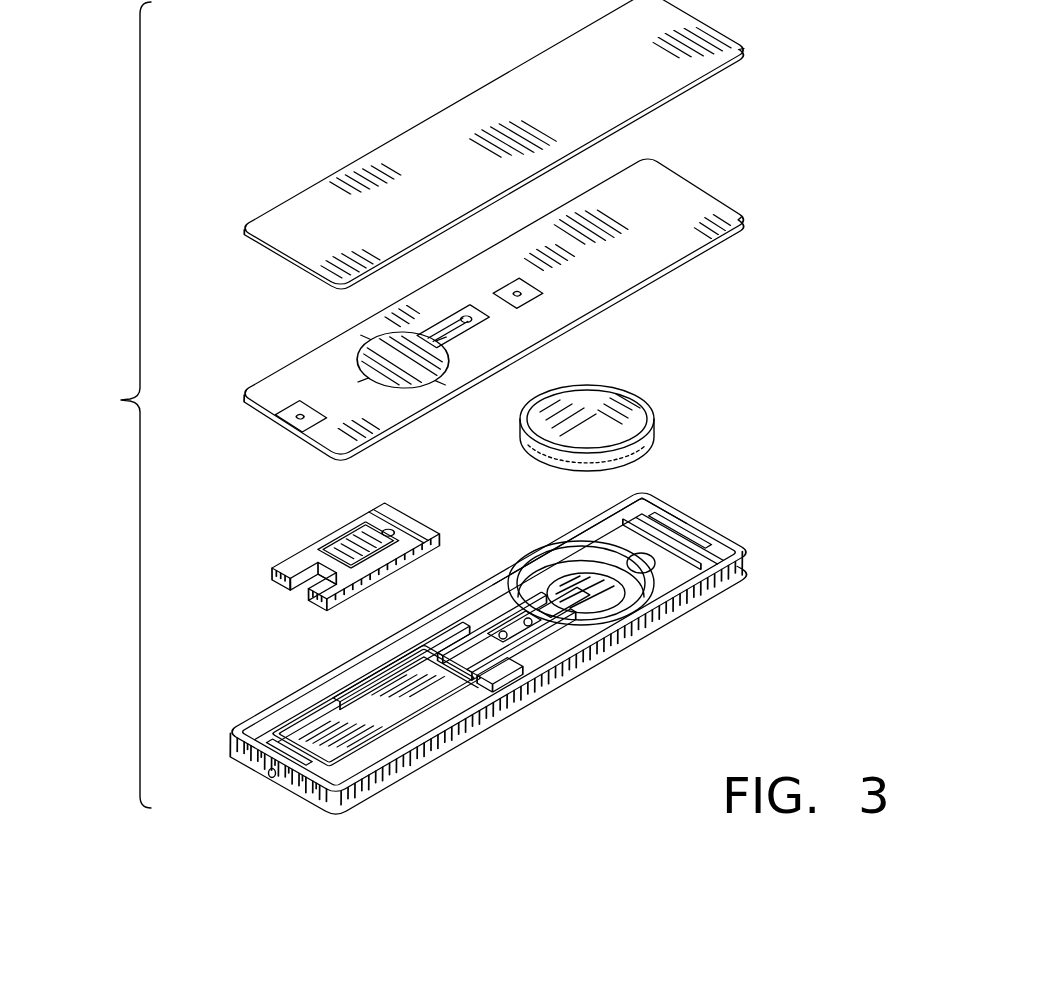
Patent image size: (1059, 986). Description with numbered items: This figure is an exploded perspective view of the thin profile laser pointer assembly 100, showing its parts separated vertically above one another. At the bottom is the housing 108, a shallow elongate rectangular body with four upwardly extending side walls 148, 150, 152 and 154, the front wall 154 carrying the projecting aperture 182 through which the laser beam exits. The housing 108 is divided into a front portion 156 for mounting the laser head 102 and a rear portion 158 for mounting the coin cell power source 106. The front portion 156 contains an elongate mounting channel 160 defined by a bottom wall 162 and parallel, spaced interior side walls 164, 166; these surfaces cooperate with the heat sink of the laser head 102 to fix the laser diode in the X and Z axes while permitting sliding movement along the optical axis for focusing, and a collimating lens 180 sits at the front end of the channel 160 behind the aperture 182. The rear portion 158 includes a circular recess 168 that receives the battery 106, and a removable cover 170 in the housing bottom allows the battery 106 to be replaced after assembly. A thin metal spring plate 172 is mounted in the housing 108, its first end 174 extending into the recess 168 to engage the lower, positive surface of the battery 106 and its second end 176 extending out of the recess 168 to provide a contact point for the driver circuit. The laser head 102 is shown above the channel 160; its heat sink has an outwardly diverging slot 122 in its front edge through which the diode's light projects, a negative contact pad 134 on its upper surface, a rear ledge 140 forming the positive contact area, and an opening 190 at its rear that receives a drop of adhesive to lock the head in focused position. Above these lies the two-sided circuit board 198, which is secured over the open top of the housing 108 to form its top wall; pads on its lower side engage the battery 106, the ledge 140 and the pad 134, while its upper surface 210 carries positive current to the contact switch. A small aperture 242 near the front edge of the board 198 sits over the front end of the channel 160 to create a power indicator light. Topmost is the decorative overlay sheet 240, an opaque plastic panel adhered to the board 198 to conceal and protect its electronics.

The laser pointer assembly 100 is at (109, 385).
The laser head 102 is at (342, 545).
The coin cell power source 106 is at (625, 392).
The housing 108 is at (498, 640).
The outwardly diverging slot 122 is at (292, 601).
The contact pad 134 is at (343, 542).
The rear ledge 140 is at (413, 528).
The side wall 148 is at (457, 595).
The side wall 150 is at (732, 586).
The side wall 152 is at (718, 527).
The front wall 154 is at (292, 788).
The front portion 156 is at (457, 744).
The rear portion 158 is at (651, 494).
The mounting channel 160 is at (311, 714).
The bottom wall 162 is at (387, 710).
The interior side wall 164 is at (340, 700).
The interior side wall 166 is at (497, 673).
The circular recess 168 is at (560, 556).
The removable cover 170 is at (607, 592).
The spring plate 172 is at (565, 636).
The first end 174 is at (605, 615).
The second end 176 is at (540, 655).
The collimating lens 180 is at (272, 740).
The projecting aperture 182 is at (267, 776).
The opening 190 is at (390, 531).
The circuit board 198 is at (486, 294).
The upper surface 210 is at (643, 250).
The overlay sheet 240 is at (420, 142).
The aperture 242 is at (298, 412).